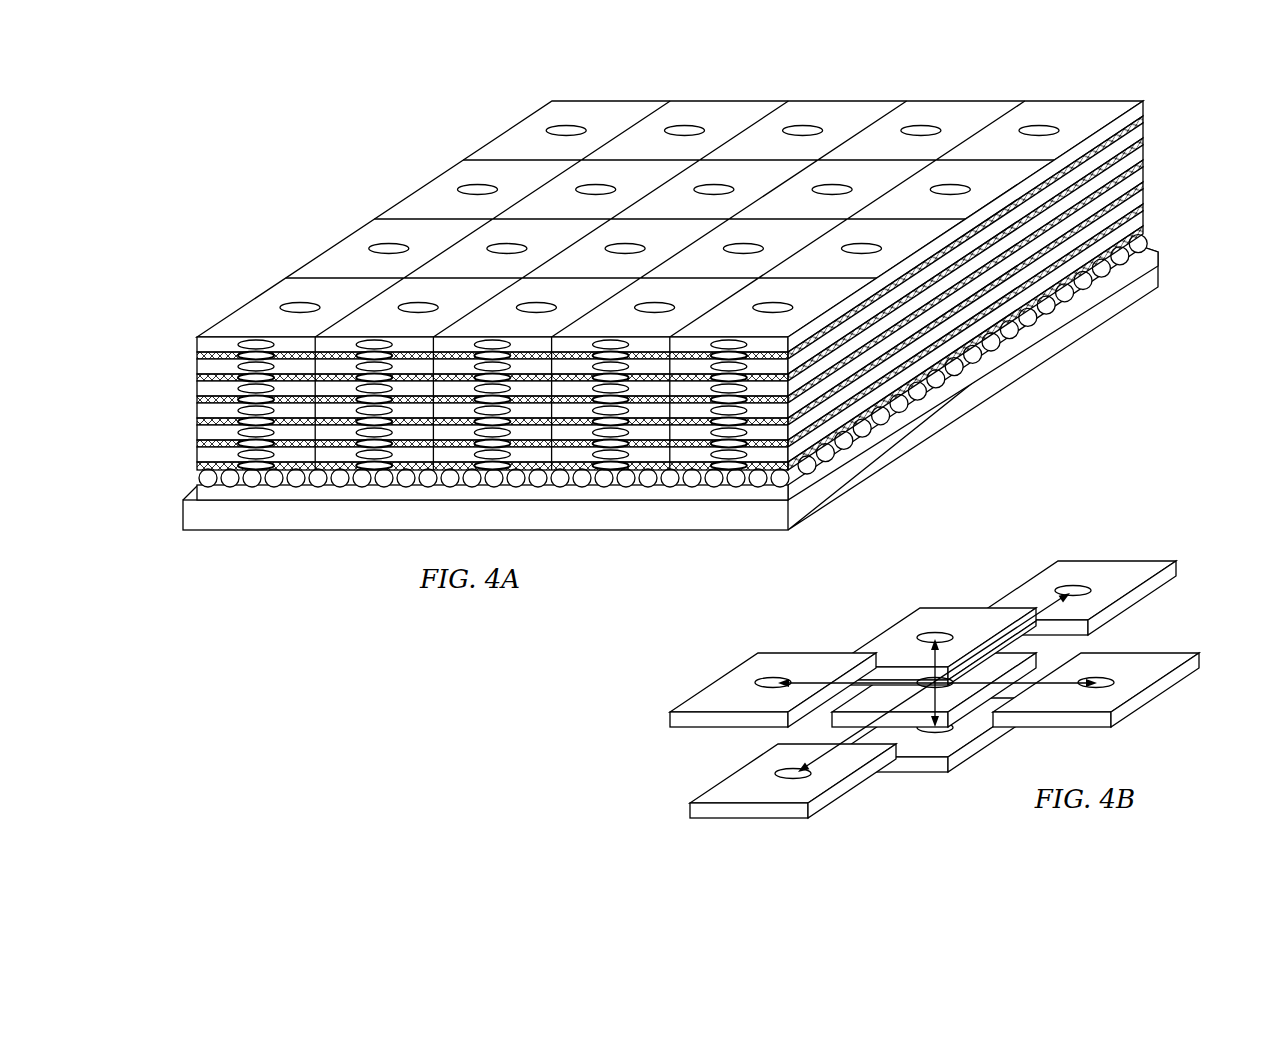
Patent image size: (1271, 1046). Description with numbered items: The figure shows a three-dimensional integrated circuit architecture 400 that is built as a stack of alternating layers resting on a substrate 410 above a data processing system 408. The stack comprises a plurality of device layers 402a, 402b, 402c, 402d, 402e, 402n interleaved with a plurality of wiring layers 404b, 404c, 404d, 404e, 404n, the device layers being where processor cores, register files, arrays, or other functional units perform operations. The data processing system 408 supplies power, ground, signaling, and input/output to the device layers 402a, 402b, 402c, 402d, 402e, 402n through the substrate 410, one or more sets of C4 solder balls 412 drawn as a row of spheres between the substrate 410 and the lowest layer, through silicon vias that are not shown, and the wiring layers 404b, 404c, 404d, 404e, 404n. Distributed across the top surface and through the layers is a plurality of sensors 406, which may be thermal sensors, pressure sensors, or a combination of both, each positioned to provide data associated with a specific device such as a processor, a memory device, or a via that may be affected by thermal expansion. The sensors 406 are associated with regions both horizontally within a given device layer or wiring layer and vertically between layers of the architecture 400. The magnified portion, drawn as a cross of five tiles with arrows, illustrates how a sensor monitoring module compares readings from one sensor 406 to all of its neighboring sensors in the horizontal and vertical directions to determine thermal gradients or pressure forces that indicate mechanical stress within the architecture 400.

In FIG. 4A, the three-dimensional architecture 400 is at (372, 140).
In FIG. 4B, the three-dimensional architecture 400 is at (858, 603).
In FIG. 4A, the device layer 402a is at (1180, 110).
In FIG. 4A, the device layer 402b is at (197, 363).
In FIG. 4A, the device layer 402c is at (197, 385).
In FIG. 4A, the device layer 402d is at (197, 407).
In FIG. 4A, the device layer 402e is at (197, 429).
In FIG. 4A, the device layer 402n is at (197, 451).
In FIG. 4A, the wiring layer 404b is at (1146, 136).
In FIG. 4A, the wiring layer 404c is at (1146, 158).
In FIG. 4A, the wiring layer 404d is at (1146, 180).
In FIG. 4A, the wiring layer 404e is at (1146, 201).
In FIG. 4A, the wiring layer 404n is at (1146, 223).
In FIG. 4A, the sensors 406 is at (567, 124).
In FIG. 4A, the data processing system 408 is at (200, 523).
In FIG. 4A, the substrate 410 is at (1127, 268).
In FIG. 4A, the C4 solder balls 412 is at (1008, 333).